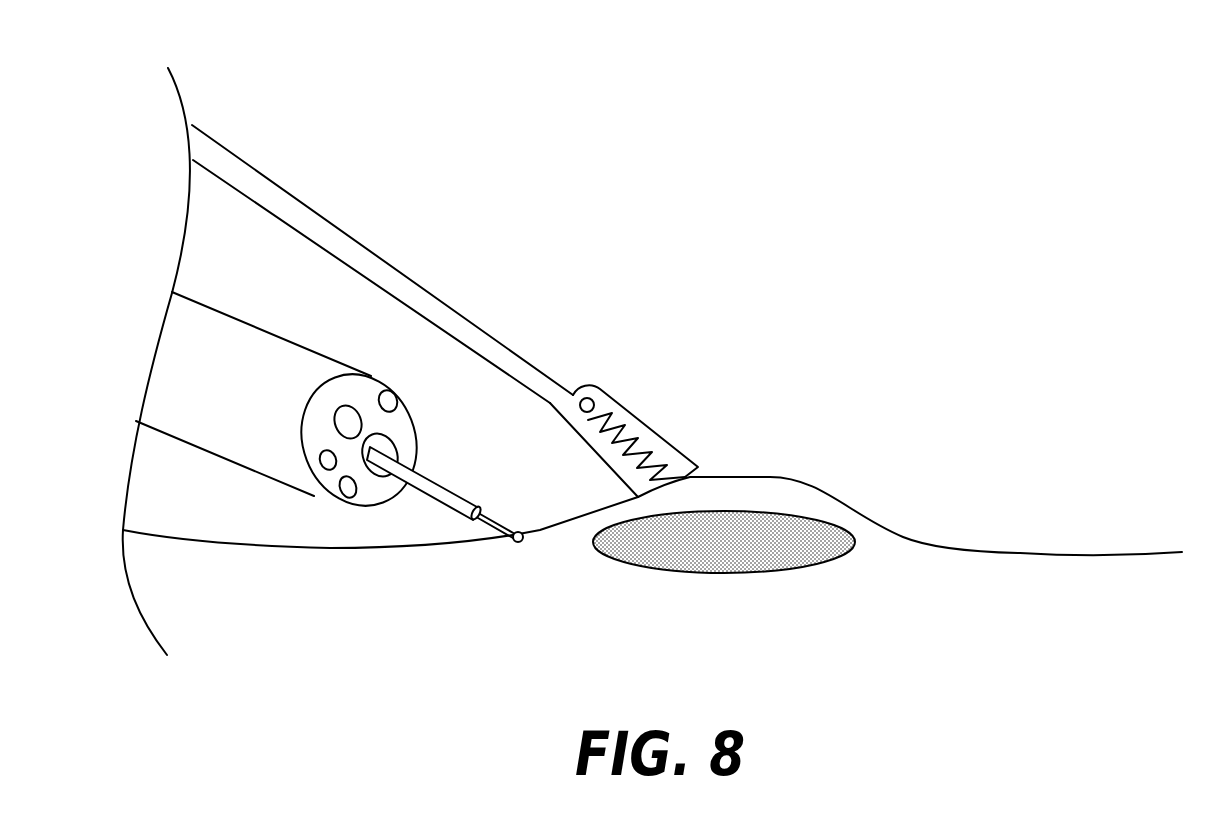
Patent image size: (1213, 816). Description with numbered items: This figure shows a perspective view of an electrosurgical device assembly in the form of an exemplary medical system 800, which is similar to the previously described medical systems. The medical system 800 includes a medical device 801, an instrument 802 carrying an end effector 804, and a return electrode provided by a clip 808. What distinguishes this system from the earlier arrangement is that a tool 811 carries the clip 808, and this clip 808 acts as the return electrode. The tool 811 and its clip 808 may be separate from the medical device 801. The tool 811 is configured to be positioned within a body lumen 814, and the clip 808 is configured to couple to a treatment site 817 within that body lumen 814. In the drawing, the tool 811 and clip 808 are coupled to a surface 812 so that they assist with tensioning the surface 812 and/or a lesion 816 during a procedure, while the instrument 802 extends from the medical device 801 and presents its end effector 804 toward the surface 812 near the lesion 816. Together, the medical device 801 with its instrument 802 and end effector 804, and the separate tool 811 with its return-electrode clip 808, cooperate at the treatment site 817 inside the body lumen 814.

The medical system 800 is at (654, 415).
The medical device 801 is at (228, 423).
The instrument 802 is at (422, 487).
The end effector 804 is at (482, 523).
The clip 808 is at (652, 440).
The tool 811 is at (390, 273).
The surface 812 is at (1127, 557).
The body lumen 814 is at (1058, 437).
The lesion 816 is at (772, 557).
The treatment site 817 is at (818, 425).